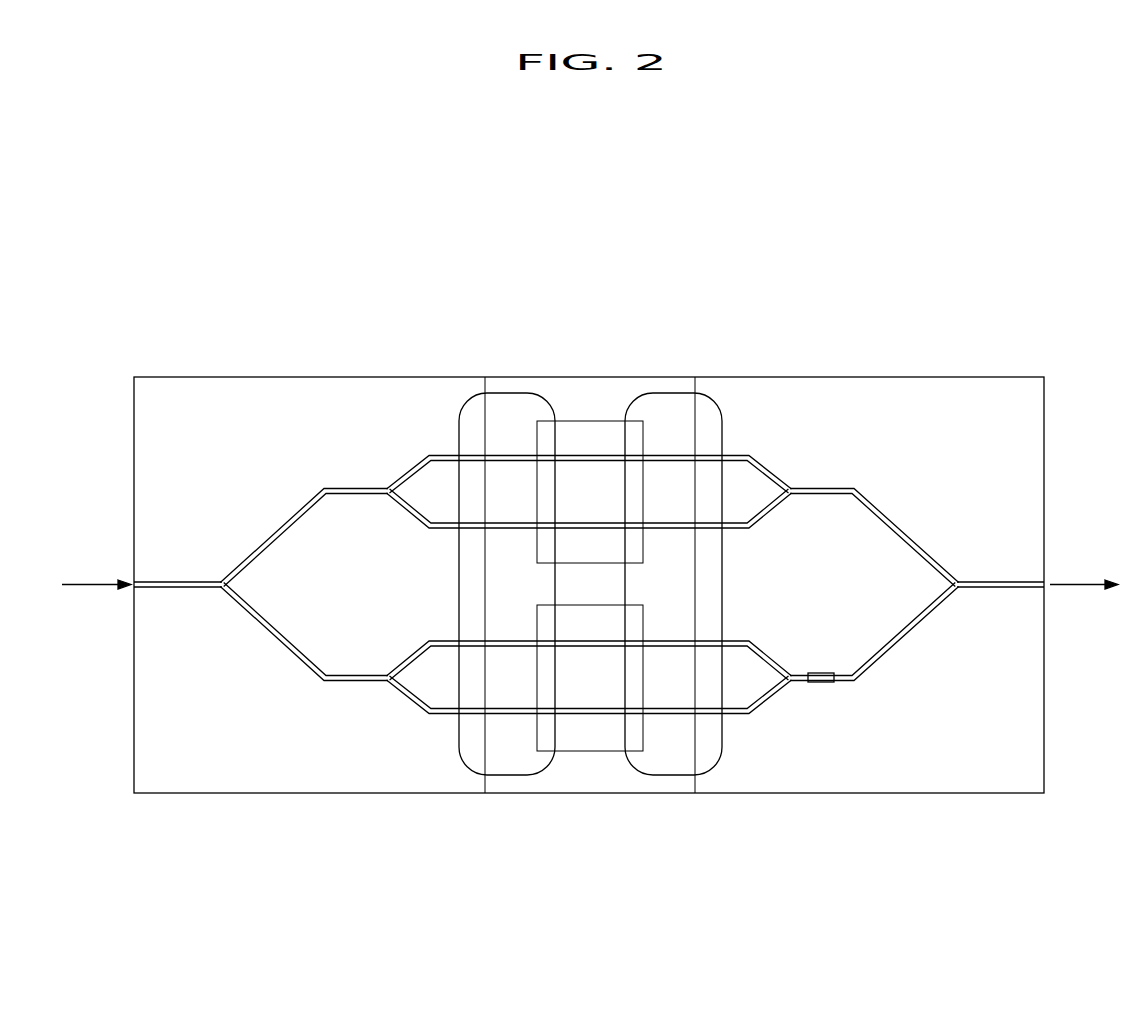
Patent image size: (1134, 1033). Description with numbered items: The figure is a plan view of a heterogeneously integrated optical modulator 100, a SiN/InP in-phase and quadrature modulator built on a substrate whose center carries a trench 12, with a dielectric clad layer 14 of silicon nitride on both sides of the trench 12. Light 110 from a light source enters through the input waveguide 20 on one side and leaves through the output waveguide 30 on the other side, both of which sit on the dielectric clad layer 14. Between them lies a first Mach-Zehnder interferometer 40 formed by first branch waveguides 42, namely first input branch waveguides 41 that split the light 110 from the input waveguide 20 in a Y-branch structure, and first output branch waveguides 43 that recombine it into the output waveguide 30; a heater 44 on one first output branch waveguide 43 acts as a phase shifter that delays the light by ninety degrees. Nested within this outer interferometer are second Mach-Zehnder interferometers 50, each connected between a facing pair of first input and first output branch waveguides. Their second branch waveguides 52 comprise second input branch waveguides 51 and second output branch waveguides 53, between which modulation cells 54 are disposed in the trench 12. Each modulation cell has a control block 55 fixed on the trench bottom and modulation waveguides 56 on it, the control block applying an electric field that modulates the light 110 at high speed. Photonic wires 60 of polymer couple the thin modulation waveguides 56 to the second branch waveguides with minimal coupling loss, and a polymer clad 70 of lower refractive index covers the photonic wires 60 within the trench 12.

The trench 12 is at (642, 591).
The dielectric clad layer 14 is at (1031, 478).
The input waveguide 20 is at (187, 583).
The output waveguide 30 is at (993, 583).
The first Mach-Zehnder interferometer 40 is at (837, 905).
The first input branch waveguides 41 is at (358, 681).
The first branch waveguides 42 is at (790, 864).
The first output branch waveguides 43 is at (800, 681).
The heater 44 is at (822, 683).
The second Mach-Zehnder interferometers 50 is at (502, 264).
The second input branch waveguides 51 is at (472, 450).
The second branch waveguides 52 is at (458, 309).
The second output branch waveguides 53 is at (710, 527).
The modulation cells 54 is at (658, 309).
The control block 55 is at (595, 430).
The modulation waveguides 56 is at (610, 457).
The photonic wires 60 is at (667, 457).
The polymer clad 70 is at (707, 413).
The heterogeneously integrated optical modulator 100 is at (873, 213).
The light 110 is at (88, 586).